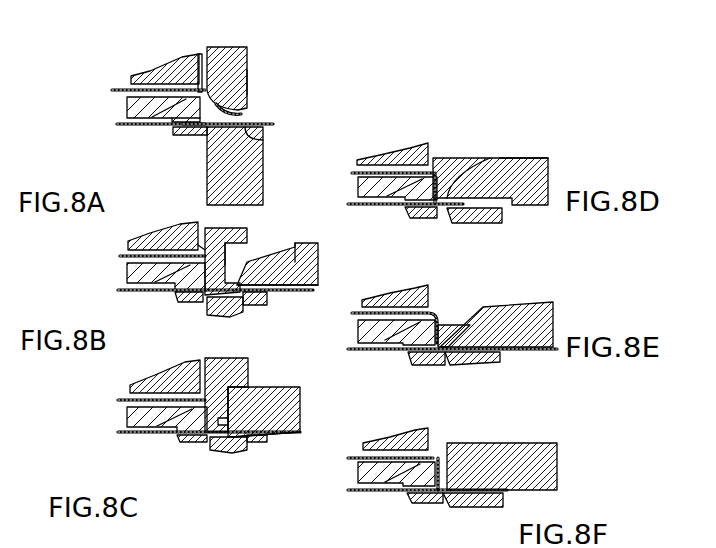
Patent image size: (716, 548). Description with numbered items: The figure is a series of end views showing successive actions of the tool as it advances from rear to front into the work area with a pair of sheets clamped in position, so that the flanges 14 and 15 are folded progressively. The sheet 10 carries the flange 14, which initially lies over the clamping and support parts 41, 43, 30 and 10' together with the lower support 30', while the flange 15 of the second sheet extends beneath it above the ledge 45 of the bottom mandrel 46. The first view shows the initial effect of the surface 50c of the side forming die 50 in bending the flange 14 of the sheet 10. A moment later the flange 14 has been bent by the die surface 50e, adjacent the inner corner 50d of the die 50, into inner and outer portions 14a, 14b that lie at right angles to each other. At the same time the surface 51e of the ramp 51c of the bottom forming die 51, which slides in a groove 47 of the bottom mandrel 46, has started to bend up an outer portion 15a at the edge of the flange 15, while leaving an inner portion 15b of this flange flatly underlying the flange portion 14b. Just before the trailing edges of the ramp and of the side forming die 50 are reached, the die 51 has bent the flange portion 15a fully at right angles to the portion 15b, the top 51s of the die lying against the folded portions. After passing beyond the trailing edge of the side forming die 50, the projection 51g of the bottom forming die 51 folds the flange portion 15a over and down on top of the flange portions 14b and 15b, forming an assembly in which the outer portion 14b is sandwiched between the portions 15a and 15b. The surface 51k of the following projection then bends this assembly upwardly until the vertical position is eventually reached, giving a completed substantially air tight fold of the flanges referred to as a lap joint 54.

In FIG. 8A, the sheet 10 is at (146, 65).
In FIG. 8A, the lower cover strip 10' is at (136, 139).
In FIG. 8A, the flange 14 is at (247, 110).
In FIG. 8D, the inner flange portion 14a is at (446, 160).
In FIG. 8E, the inner flange portion 14a is at (443, 322).
In FIG. 8B, the outer flange portion 14b is at (187, 300).
In FIG. 8D, the outer flange portion 14b is at (445, 212).
In FIG. 8E, the outer flange portion 14b is at (448, 363).
In FIG. 8A, the flange 15 is at (272, 123).
In FIG. 8B, the outer flange portion 15a is at (334, 250).
In FIG. 8C, the outer flange portion 15a is at (231, 407).
In FIG. 8D, the outer flange portion 15a is at (494, 157).
In FIG. 8E, the outer flange portion 15a is at (457, 323).
In FIG. 8B, the inner flange portion 15b is at (212, 308).
In FIG. 8C, the inner flange portion 15b is at (223, 451).
In FIG. 8D, the inner flange portion 15b is at (450, 210).
In FIG. 8E, the inner flange portion 15b is at (493, 356).
In FIG. 8A, the support block 30 is at (127, 106).
In FIG. 8A, the lower support block 30' is at (151, 134).
In FIG. 8A, the upper clamp 41 is at (162, 72).
In FIG. 8A, the thin plate 43 is at (183, 88).
In FIG. 8A, the ledge 45 is at (195, 133).
In FIG. 8A, the bottom mandrel 46 is at (225, 178).
In FIG. 8A, the groove 47 is at (265, 138).
In FIG. 8B, the groove 47 is at (247, 306).
In FIG. 8A, the side forming die 50 is at (238, 58).
In FIG. 8B, the side forming die 50 is at (247, 225).
In FIG. 8A, the surface of side forming die 50c is at (246, 78).
In FIG. 8B, the block inner corner 50d is at (233, 265).
In FIG. 8B, the die surface 50e is at (203, 248).
In FIG. 8C, the die surface 50e is at (200, 440).
In FIG. 8C, the bottom forming die 51 is at (277, 397).
In FIG. 8B, the ramp 51c is at (293, 292).
In FIG. 8B, the ramp surface 51e is at (293, 272).
In FIG. 8C, the ramp surface 51e is at (300, 426).
In FIG. 8D, the projection 51g is at (448, 182).
In FIG. 8E, the surface of projection 51k is at (497, 308).
In FIG. 8F, the surface of projection 51k is at (470, 480).
In FIG. 8D, the wedge top 51s is at (478, 158).
In FIG. 8F, the lap joint 54 is at (450, 458).